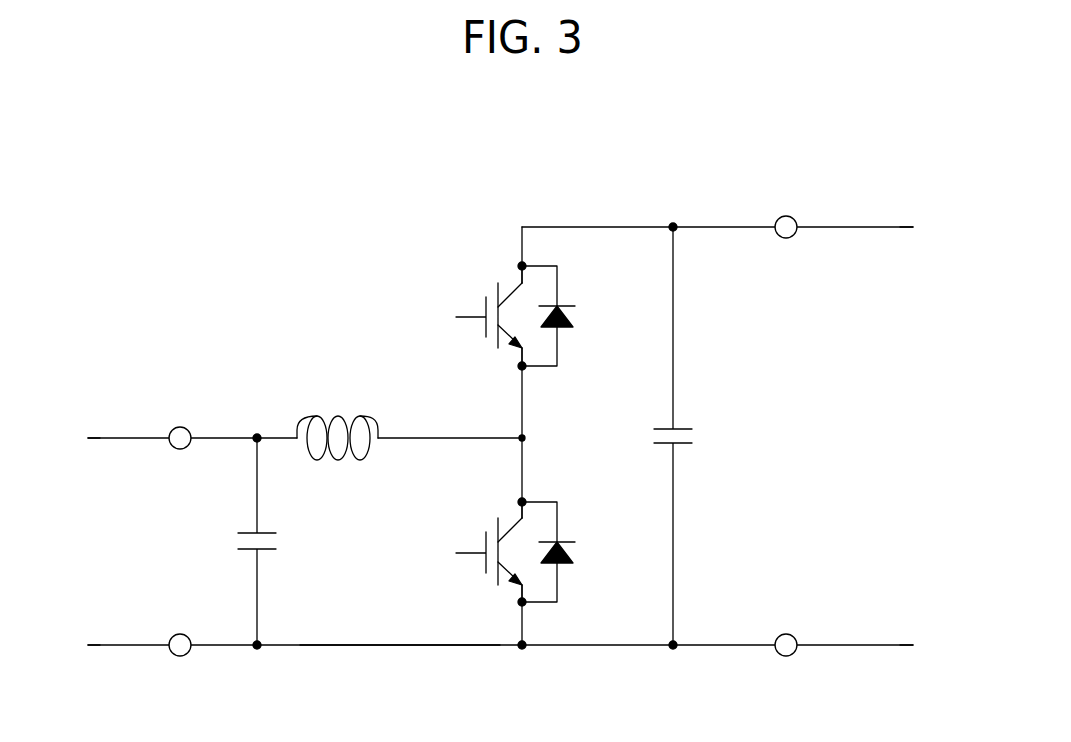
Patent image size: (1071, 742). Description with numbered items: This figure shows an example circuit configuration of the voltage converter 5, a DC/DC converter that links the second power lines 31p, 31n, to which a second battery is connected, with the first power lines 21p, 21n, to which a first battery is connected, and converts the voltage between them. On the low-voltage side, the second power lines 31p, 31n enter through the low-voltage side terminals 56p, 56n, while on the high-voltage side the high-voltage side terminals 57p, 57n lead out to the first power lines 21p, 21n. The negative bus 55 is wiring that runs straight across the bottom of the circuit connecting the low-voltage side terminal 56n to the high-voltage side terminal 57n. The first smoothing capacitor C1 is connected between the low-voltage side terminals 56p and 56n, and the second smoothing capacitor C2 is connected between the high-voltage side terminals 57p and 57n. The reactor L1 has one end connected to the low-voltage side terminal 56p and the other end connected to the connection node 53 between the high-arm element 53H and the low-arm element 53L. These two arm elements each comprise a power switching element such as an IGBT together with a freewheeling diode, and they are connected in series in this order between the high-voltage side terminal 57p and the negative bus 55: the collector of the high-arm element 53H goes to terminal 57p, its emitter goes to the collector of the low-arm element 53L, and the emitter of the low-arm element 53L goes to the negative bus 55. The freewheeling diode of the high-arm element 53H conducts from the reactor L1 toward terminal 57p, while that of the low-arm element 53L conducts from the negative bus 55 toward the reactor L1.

The voltage converter 5 is at (268, 194).
The second power line 31p is at (103, 438).
The second power line 31n is at (107, 644).
The low-voltage side terminal 56p is at (185, 427).
The low-voltage side terminal 56n is at (182, 634).
The first smoothing capacitor C1 is at (265, 533).
The reactor L1 is at (352, 414).
The connection node 53 is at (526, 438).
The high-arm element 53H is at (450, 289).
The low-arm element 53L is at (435, 543).
The negative bus 55 is at (403, 644).
The second smoothing capacitor C2 is at (685, 428).
The high-voltage side terminal 57p is at (788, 216).
The high-voltage side terminal 57n is at (788, 634).
The first power line 21p is at (893, 227).
The first power line 21n is at (900, 645).